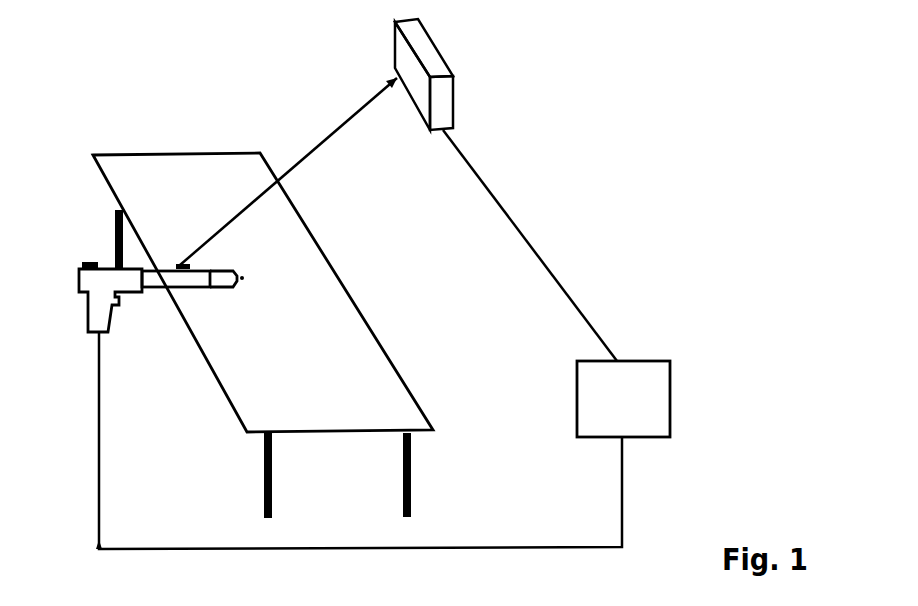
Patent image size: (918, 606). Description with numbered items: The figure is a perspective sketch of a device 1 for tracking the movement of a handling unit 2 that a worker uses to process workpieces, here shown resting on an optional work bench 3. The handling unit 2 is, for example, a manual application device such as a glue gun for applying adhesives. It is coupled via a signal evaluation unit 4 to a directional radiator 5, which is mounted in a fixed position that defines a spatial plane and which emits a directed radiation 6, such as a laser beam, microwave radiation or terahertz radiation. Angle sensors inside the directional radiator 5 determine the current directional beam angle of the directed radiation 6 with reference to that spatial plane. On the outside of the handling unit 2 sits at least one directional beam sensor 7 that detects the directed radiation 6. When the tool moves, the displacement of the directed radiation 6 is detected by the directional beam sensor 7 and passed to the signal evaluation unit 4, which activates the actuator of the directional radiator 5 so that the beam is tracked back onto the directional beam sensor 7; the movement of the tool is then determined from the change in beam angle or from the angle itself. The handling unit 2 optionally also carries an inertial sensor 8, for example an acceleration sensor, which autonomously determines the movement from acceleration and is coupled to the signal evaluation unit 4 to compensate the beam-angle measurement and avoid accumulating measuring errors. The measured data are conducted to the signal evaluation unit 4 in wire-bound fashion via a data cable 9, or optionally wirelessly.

The device 1 is at (593, 208).
The handling unit 2 is at (82, 317).
The work bench 3 is at (393, 371).
The signal evaluation unit 4 is at (623, 399).
The directional radiator 5 is at (440, 52).
The directed radiation 6 is at (327, 130).
The directional beam sensor 7 is at (180, 265).
The inertial sensor 8 is at (83, 260).
The data cable 9 is at (140, 553).